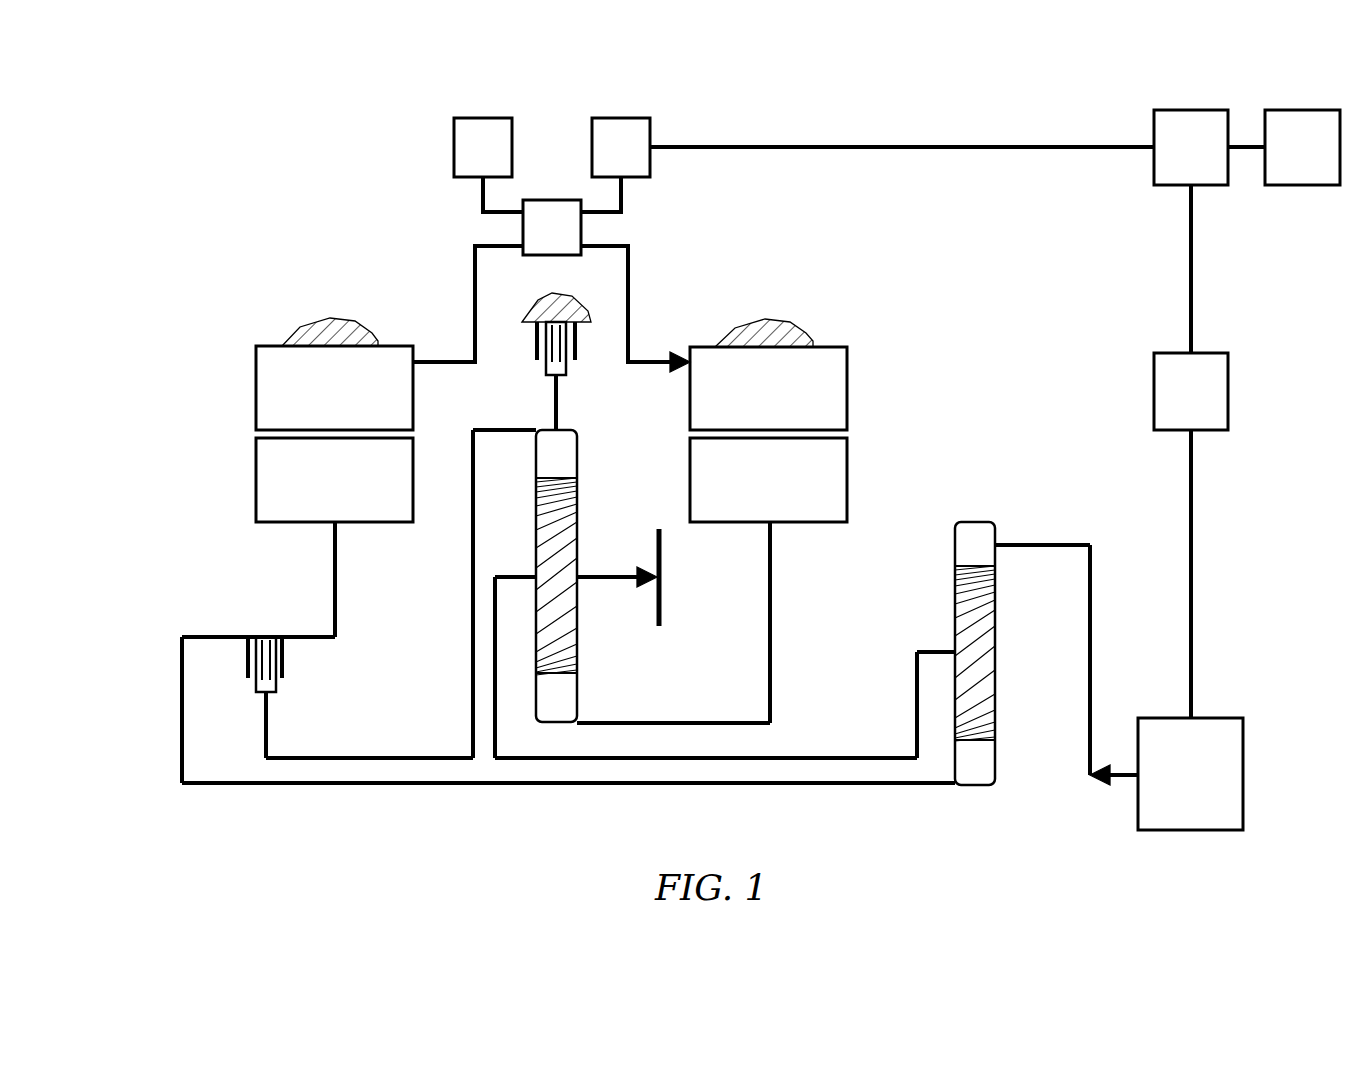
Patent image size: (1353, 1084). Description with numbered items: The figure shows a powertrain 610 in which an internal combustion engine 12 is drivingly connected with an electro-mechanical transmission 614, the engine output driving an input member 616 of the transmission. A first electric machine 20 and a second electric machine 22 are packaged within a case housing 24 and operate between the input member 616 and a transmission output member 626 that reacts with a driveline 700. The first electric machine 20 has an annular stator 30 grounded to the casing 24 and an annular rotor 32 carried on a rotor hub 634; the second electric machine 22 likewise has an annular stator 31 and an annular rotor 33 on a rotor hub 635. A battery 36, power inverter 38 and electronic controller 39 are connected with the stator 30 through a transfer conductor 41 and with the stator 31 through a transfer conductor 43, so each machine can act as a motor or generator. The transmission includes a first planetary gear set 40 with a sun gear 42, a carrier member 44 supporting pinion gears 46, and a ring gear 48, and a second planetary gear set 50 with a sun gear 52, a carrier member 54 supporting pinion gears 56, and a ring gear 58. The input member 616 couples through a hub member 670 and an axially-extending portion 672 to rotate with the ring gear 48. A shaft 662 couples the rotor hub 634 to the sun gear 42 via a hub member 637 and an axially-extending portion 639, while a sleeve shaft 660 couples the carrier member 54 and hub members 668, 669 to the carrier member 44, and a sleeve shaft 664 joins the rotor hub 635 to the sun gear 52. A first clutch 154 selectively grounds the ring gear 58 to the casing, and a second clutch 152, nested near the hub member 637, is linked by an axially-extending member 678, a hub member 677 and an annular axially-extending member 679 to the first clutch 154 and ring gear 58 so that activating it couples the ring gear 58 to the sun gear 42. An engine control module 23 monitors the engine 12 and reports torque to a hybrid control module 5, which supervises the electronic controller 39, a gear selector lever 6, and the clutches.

The hybrid control module 5 is at (1191, 147).
The gear selector lever 6 is at (1302, 147).
The internal combustion engine 12 is at (1190, 774).
The first electric machine 20 is at (233, 443).
The second electric machine 22 is at (857, 432).
The engine control module 23 is at (1191, 391).
The case housing 24 is at (322, 321).
The annular stator 30 is at (334, 388).
The annular stator 31 is at (768, 388).
The annular rotor 32 is at (334, 480).
The annular rotor 33 is at (768, 480).
The battery 36 is at (483, 147).
The power inverter 38 is at (552, 227).
The electronic controller 39 is at (621, 147).
The first planetary gear set 40 is at (1012, 627).
The transfer conductor 41 is at (443, 360).
The sun gear 42 is at (995, 757).
The transfer conductor 43 is at (628, 308).
The carrier member 44 is at (936, 652).
The pinion gears 46 is at (995, 608).
The ring gear 48 is at (968, 522).
The second planetary gear set 50 is at (602, 574).
The sun gear 52 is at (580, 698).
The carrier member 54 is at (518, 577).
The pinion gears 56 is at (580, 516).
The ring gear 58 is at (580, 456).
The second clutch 152 is at (292, 684).
The first clutch 154 is at (592, 352).
The powertrain 610 is at (893, 333).
The electro-mechanical transmission 614 is at (230, 335).
The input member 616 is at (1122, 778).
The transmission output member 626 is at (618, 579).
The rotor hub 634 is at (335, 598).
The rotor hub 635 is at (770, 576).
The hub member 637 is at (182, 693).
The axially-extending portion 639 is at (210, 637).
The sleeve shaft 660 is at (830, 758).
The shaft 662 is at (690, 783).
The sleeve shaft 664 is at (760, 723).
The hub member 668 is at (495, 625).
The hub member 669 is at (917, 687).
The hub member 670 is at (1090, 630).
The axially-extending portion 672 is at (1018, 545).
The hub member 677 is at (473, 587).
The axially-extending member 678 is at (516, 430).
The axially-extending member 679 is at (398, 758).
The driveline 700 is at (665, 566).